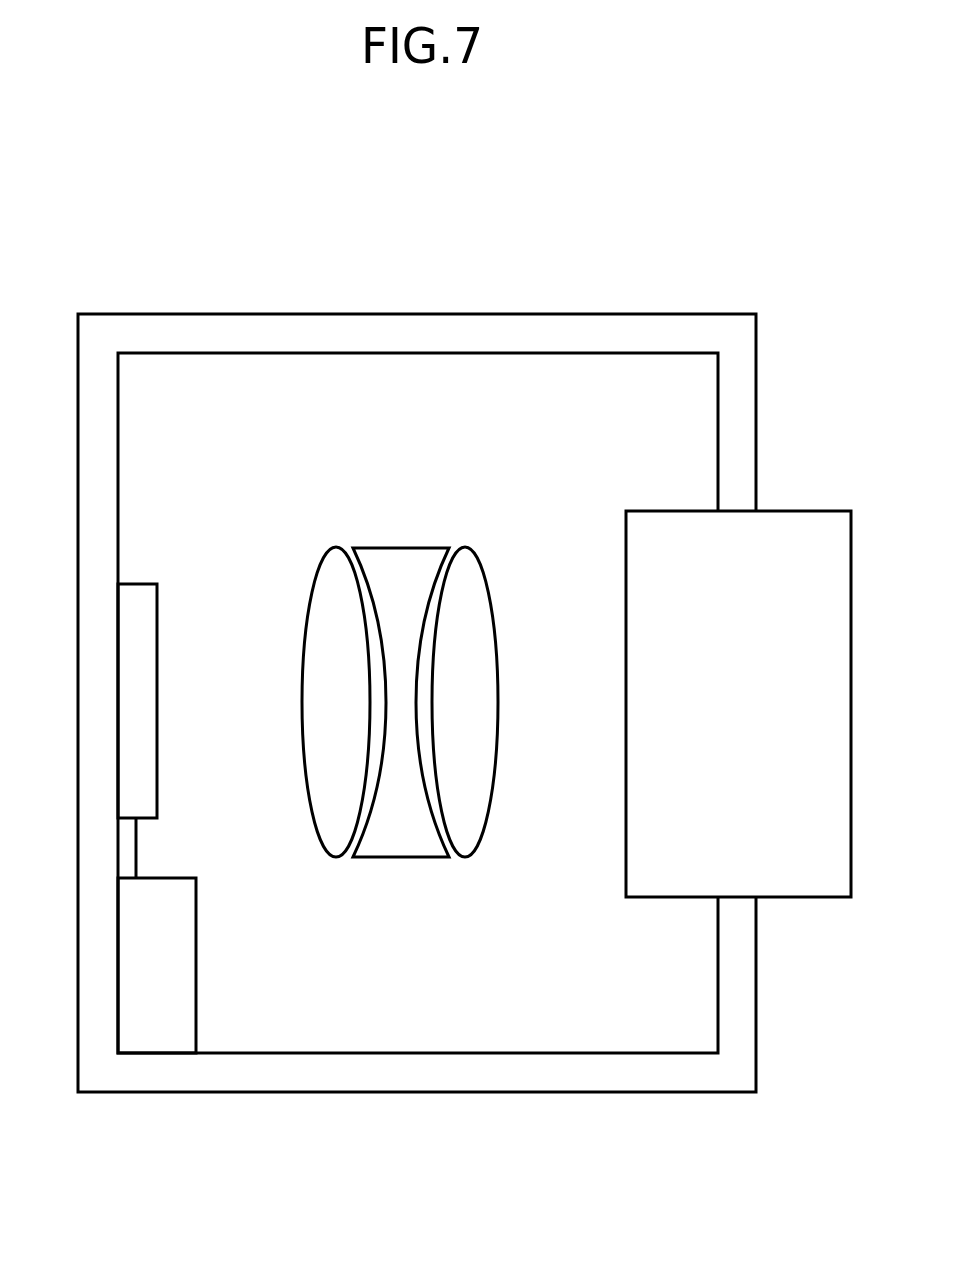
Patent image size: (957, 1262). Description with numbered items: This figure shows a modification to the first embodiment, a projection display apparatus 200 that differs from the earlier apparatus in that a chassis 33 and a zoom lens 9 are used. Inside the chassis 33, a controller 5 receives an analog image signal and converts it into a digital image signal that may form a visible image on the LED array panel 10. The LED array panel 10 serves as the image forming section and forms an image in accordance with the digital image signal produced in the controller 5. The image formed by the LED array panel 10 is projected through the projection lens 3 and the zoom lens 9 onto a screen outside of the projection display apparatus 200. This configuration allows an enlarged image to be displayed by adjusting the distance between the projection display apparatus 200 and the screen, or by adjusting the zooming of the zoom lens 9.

The projection display apparatus 200 is at (464, 647).
The chassis 33 is at (586, 329).
The projection lens 3 is at (304, 516).
The zoom lens 9 is at (808, 511).
The LED array panel 10 is at (140, 584).
The controller 5 is at (197, 998).